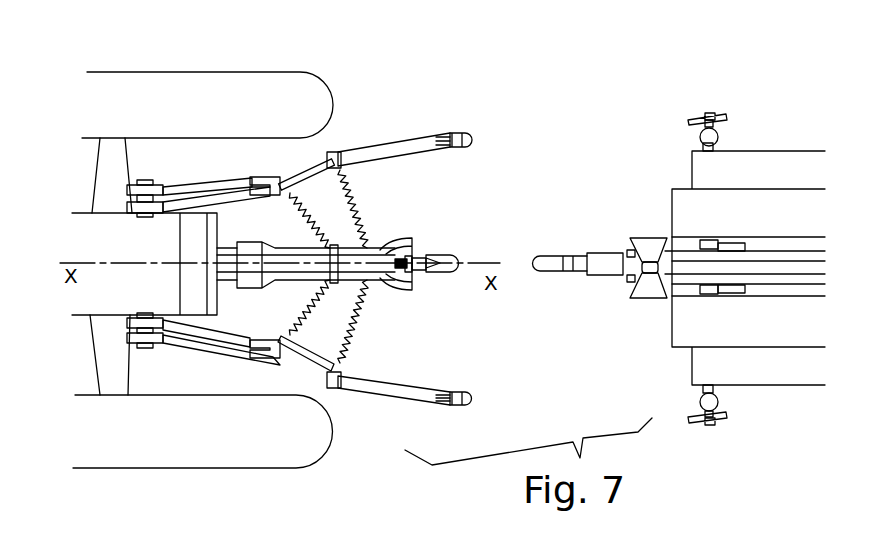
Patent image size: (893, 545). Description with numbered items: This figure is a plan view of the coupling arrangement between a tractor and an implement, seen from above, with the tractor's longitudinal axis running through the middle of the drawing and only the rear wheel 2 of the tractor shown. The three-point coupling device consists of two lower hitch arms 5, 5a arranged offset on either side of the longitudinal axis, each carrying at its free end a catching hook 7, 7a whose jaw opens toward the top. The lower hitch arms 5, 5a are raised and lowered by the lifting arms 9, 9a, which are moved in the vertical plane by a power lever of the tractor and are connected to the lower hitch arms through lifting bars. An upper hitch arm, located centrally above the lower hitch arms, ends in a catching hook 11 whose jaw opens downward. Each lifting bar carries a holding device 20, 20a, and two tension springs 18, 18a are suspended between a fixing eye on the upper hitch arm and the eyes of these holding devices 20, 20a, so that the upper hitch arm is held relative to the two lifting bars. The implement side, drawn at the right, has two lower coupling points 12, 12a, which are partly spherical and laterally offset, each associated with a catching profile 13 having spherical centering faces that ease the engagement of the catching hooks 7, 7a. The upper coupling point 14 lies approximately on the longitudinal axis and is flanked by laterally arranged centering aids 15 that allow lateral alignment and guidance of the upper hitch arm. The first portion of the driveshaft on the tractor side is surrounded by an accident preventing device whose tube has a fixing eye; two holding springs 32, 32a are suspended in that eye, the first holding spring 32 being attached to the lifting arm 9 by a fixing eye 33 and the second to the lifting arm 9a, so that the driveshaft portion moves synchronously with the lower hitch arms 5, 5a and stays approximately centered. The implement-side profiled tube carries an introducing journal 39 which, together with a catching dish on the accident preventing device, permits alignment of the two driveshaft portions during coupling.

The rear wheel 2 is at (235, 90).
The lower hitch arm 5 is at (393, 145).
The lower hitch arm 5a is at (393, 399).
The catching hook 7 is at (460, 133).
The catching hook 7a is at (460, 405).
The lifting arm 9 is at (222, 195).
The lifting arm 9a is at (205, 338).
The catching hook 11 is at (445, 258).
The lower coupling point 12 is at (696, 141).
The lower coupling point 12a is at (698, 402).
The catching profile 13 is at (720, 121).
The upper coupling point 14 is at (638, 270).
The centering aid 15 is at (650, 238).
The tension spring 18 is at (355, 210).
The tension spring 18a is at (360, 318).
The holding device 20 is at (309, 167).
The holding device 20a is at (305, 365).
The holding spring 32 is at (300, 207).
The holding spring 32a is at (308, 304).
The fixing eye 33 is at (285, 190).
The introducing journal 39 is at (546, 258).